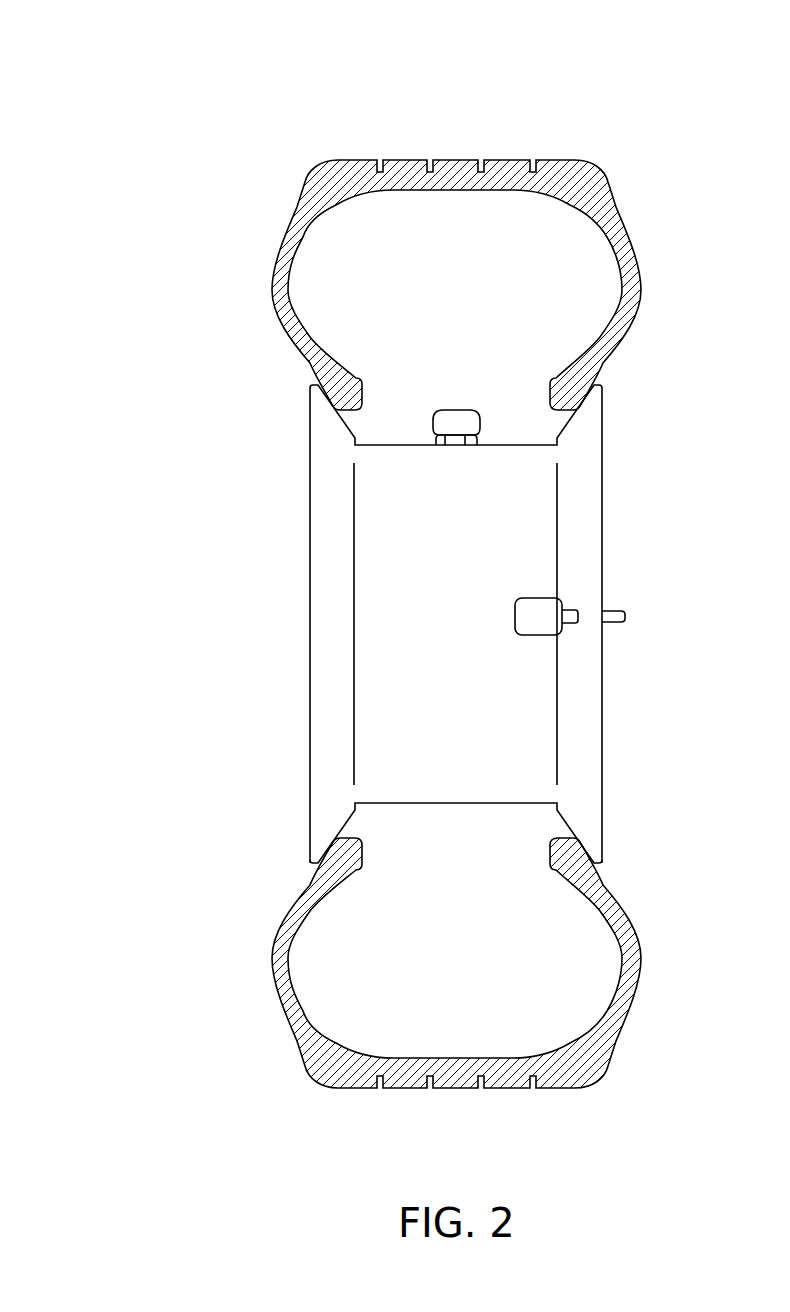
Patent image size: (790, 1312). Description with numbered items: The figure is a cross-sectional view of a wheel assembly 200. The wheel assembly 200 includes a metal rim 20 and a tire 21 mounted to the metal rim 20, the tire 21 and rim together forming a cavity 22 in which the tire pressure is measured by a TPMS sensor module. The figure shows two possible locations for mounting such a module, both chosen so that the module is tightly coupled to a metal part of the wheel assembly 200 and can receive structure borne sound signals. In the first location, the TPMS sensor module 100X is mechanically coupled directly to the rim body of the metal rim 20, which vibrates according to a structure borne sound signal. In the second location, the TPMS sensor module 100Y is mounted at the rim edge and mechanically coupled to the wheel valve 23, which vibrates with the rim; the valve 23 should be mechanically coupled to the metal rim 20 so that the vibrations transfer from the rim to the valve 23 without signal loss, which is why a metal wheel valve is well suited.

The wheel assembly 200 is at (156, 61).
The metal rim 20 is at (603, 517).
The tire 21 is at (602, 176).
The cavity 22 is at (597, 290).
The wheel valve 23 is at (625, 617).
The TPMS sensor module 100X is at (455, 410).
The TPMS sensor module 100Y is at (515, 614).